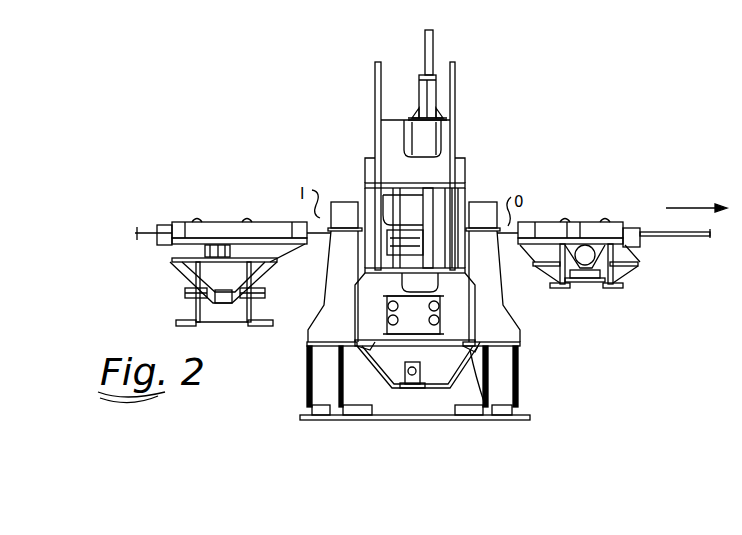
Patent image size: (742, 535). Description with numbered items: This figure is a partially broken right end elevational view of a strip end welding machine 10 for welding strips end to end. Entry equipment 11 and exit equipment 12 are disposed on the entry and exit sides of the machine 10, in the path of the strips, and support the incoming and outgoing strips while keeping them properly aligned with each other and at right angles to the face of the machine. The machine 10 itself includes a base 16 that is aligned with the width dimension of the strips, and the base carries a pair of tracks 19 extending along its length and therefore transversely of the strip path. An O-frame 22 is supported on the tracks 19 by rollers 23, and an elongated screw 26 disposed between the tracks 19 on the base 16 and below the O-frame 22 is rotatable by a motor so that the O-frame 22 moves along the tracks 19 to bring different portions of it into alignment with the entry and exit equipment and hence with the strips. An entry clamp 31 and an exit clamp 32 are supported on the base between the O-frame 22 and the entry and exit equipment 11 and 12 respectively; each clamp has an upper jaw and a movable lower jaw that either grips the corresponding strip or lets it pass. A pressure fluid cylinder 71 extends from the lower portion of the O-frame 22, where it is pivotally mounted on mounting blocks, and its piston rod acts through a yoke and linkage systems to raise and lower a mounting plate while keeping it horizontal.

The strip end welding machine 10 is at (546, 109).
The entry equipment 11 is at (223, 213).
The exit equipment 12 is at (585, 216).
The base 16 is at (430, 406).
The tracks 19 is at (481, 340).
The O-frame 22 is at (457, 76).
The rollers 23 is at (358, 331).
The elongated screw 26 is at (417, 373).
The entry clamp 31 is at (338, 199).
The exit clamp 32 is at (487, 199).
The pressure fluid cylinder 71 is at (427, 318).